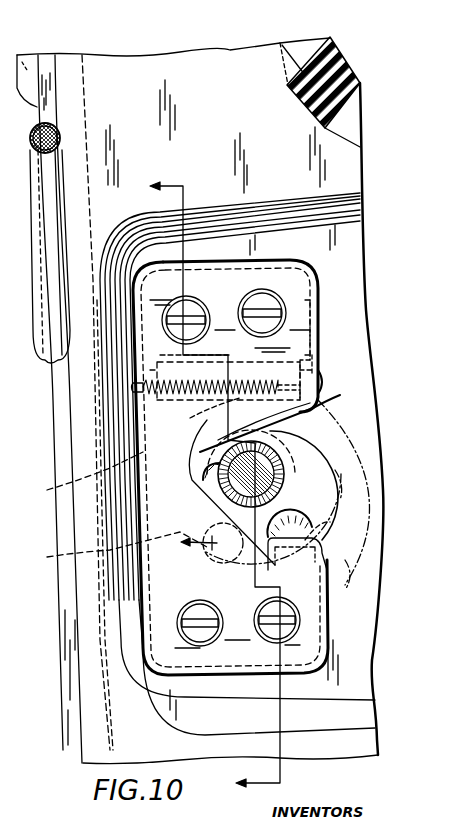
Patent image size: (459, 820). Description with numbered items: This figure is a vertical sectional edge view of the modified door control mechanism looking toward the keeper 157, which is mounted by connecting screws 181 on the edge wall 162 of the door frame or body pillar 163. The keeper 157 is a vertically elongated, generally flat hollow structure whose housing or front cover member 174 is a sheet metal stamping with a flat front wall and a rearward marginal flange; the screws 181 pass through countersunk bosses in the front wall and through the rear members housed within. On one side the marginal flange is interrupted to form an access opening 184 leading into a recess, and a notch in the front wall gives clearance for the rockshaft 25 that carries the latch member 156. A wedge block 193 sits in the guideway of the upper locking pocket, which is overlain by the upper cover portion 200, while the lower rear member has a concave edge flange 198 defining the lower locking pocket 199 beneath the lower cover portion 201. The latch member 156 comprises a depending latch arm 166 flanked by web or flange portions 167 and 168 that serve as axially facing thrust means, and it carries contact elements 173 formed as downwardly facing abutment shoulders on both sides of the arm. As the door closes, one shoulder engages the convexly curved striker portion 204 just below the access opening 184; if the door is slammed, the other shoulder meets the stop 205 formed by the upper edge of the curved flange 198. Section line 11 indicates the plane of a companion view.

The edge wall 162 is at (163, 67).
The door frame or body pillar 163 is at (360, 38).
The section line 11- 11 is at (203, 486).
The keeper 157 is at (313, 290).
The housing or front cover member 174 is at (316, 322).
The connecting screws 181 is at (268, 292).
The wedge block 193 is at (323, 362).
The access opening 184 is at (326, 408).
The latch arm 166 is at (192, 548).
The upper cover portion 200 is at (84, 471).
The stop 205 is at (116, 543).
The web or flange portion 167 is at (203, 416).
The contact elements 173 is at (340, 500).
The rockshaft 25 is at (310, 452).
The lower cover portion 201 is at (251, 468).
The web or flange portion 168 is at (308, 513).
The latch member 156 is at (334, 489).
The striker portion 204 is at (326, 524).
The edge flange 198 is at (212, 584).
The lower locking pocket 199 is at (258, 597).